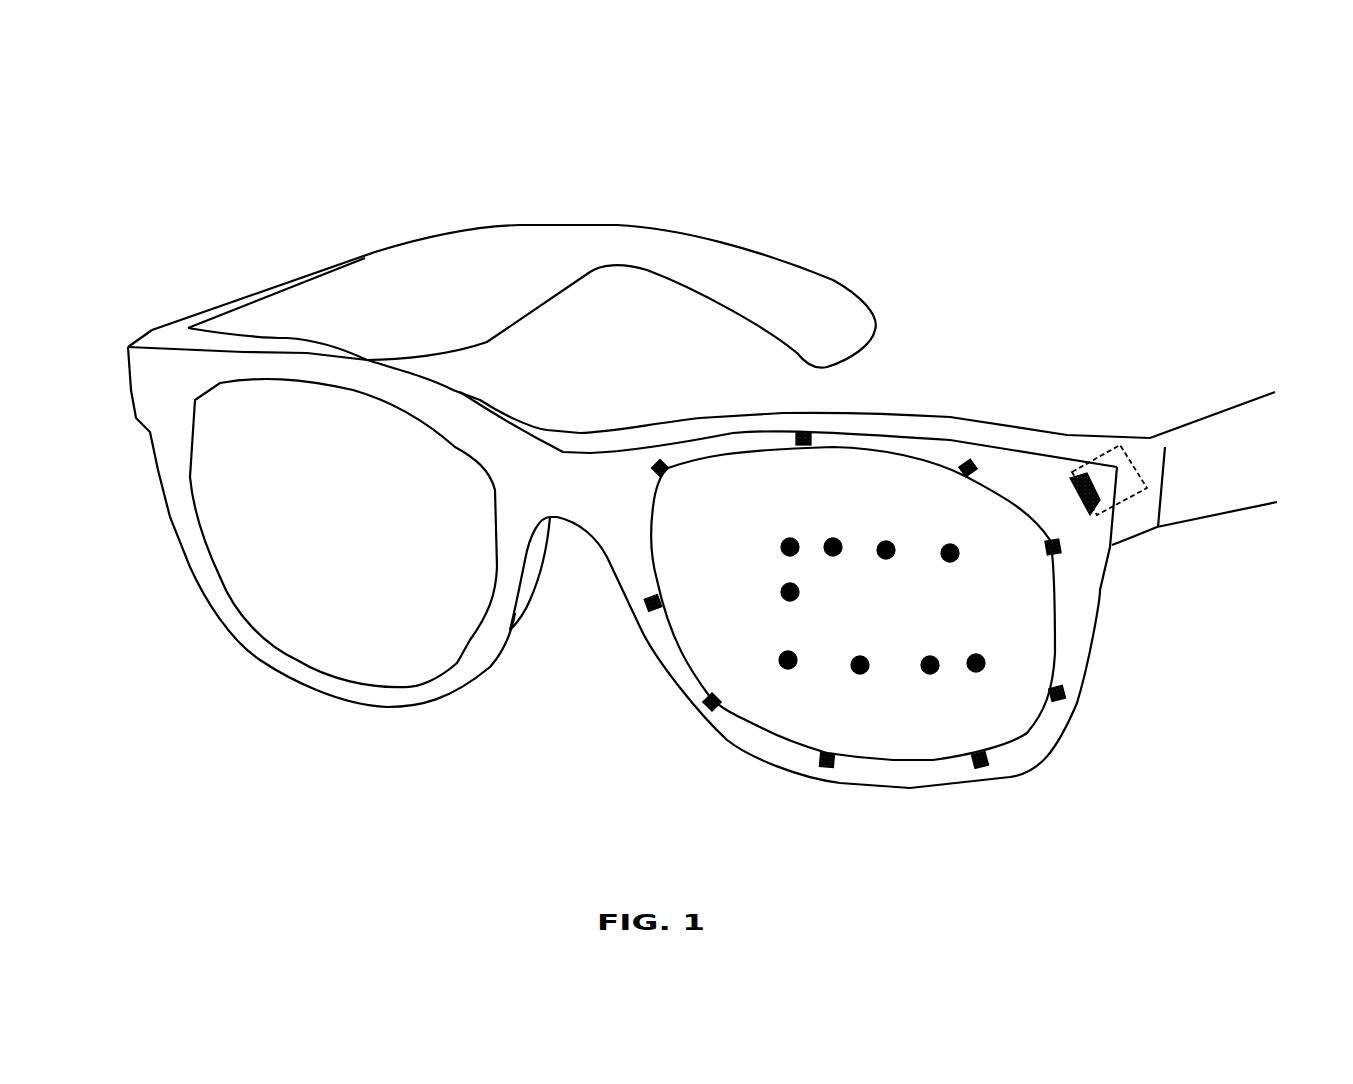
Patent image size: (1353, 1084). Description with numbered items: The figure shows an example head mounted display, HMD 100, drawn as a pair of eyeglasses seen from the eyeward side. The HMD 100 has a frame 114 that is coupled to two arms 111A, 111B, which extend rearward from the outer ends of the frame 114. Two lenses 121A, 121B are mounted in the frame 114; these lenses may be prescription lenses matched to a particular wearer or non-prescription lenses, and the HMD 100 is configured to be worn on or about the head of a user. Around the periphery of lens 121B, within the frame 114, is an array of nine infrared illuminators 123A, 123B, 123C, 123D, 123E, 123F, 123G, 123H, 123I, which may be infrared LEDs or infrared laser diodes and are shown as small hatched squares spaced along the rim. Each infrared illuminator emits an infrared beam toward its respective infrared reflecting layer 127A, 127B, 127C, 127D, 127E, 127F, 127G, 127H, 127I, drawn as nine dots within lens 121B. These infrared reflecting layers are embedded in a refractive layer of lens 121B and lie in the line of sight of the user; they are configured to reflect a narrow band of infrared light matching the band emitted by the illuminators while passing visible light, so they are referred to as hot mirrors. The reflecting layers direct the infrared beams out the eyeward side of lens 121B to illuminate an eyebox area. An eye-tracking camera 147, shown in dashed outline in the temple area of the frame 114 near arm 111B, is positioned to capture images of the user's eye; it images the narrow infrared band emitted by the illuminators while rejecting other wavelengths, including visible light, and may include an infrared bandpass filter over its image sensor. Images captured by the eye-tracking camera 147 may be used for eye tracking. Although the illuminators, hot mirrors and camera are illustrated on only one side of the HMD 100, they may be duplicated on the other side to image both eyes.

The head mounted display 100 is at (1237, 91).
The arm 111A is at (482, 311).
The arm 111B is at (1235, 480).
The frame 114 is at (180, 390).
The lens 121A is at (462, 575).
The lens 121B is at (928, 755).
The infrared illuminator 123A is at (973, 459).
The infrared illuminator 123B is at (1066, 549).
The infrared illuminator 123C is at (1068, 695).
The infrared illuminator 123D is at (993, 772).
The infrared illuminator 123E is at (825, 772).
The infrared illuminator 123F is at (705, 712).
The infrared illuminator 123G is at (646, 607).
The infrared illuminator 123H is at (659, 459).
The infrared illuminator 123I is at (811, 433).
The infrared reflecting layer 127A is at (957, 546).
The infrared reflecting layer 127B is at (984, 670).
The infrared reflecting layer 127C is at (933, 674).
The infrared reflecting layer 127D is at (862, 674).
The infrared reflecting layer 127E is at (793, 670).
The infrared reflecting layer 127F is at (782, 595).
The infrared reflecting layer 127G is at (781, 547).
The infrared reflecting layer 127H is at (826, 540).
The infrared reflecting layer 127I is at (881, 541).
The eye-tracking camera 147 is at (1127, 455).